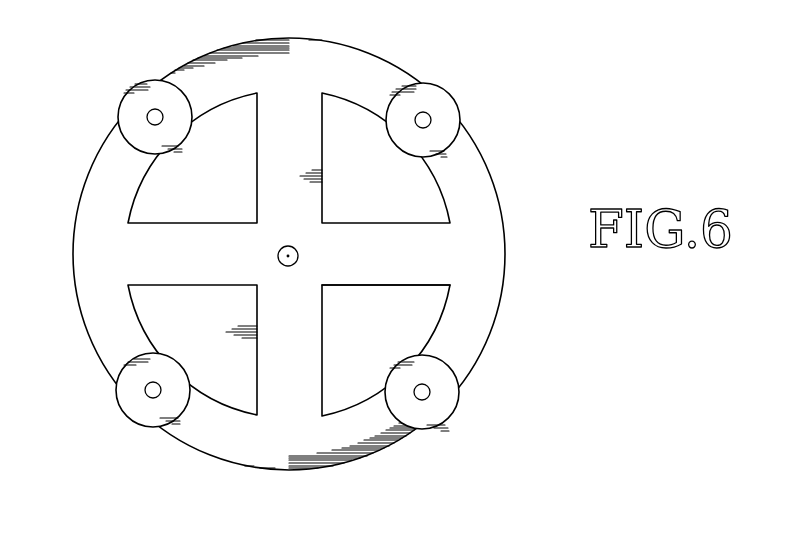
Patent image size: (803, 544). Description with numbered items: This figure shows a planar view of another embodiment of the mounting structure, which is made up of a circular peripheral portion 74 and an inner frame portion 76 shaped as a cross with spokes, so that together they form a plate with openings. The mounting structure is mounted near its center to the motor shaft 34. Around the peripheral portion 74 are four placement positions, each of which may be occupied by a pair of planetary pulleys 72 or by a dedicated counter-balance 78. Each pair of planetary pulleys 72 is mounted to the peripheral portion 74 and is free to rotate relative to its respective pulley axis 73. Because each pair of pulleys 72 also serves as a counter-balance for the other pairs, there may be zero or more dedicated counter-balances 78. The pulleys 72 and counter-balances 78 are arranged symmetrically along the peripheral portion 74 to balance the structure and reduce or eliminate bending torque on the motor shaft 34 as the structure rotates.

The motor shaft 34 is at (298, 257).
The planetary pulleys 72 is at (137, 98).
The pulley axis 73 is at (147, 117).
The peripheral portion 74 is at (498, 212).
The inner frame portion 76 is at (378, 223).
The dedicated counter-balance 78 is at (127, 417).